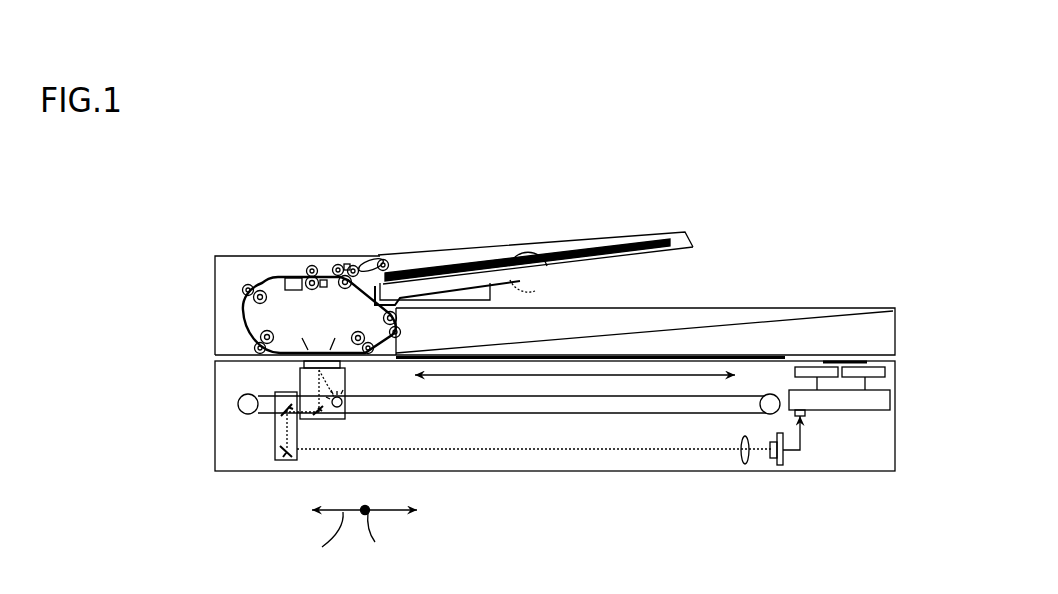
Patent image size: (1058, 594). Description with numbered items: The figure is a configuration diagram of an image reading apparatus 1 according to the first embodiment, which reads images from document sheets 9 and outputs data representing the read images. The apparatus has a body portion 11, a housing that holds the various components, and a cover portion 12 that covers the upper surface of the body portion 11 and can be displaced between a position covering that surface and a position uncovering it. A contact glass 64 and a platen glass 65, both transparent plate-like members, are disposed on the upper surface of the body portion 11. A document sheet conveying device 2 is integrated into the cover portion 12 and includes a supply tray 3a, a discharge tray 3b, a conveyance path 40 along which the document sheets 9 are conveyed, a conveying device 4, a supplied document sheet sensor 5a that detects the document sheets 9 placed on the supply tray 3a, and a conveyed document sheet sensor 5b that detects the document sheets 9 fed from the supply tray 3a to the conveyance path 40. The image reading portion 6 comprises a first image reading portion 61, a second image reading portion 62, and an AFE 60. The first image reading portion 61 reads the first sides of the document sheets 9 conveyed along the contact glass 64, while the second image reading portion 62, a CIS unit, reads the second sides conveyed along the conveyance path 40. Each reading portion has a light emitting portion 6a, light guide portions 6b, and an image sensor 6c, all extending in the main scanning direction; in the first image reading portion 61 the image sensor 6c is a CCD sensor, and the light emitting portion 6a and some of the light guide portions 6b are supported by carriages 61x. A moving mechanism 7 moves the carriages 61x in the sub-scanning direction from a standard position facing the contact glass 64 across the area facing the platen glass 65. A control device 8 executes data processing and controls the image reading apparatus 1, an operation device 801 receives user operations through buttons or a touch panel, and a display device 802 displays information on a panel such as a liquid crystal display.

The image reading apparatus 1 is at (791, 194).
The document sheet conveying device 2 is at (431, 238).
The supply tray 3a is at (649, 260).
The discharge tray 3b is at (740, 323).
The conveying device 4 is at (315, 256).
The supplied document sheet sensor 5a is at (535, 291).
The conveyed document sheet sensor 5b is at (324, 284).
The image reading portion 6 is at (558, 336).
The light emitting portion 6a is at (346, 400).
The light guide portions 6b is at (288, 410).
The image sensor 6c is at (780, 467).
The moving mechanism 7 is at (236, 405).
The control device 8 is at (890, 403).
The document sheets 9 is at (587, 253).
The body portion 11 is at (215, 443).
The cover portion 12 is at (898, 332).
The conveyance path 40 is at (263, 278).
The AFE 60 is at (805, 414).
The first image reading portion 61 is at (558, 435).
The carriages 61x is at (297, 438).
The second image reading portion 62 is at (280, 278).
The contact glass 64 is at (345, 369).
The platen glass 65 is at (760, 357).
The operation device 801 is at (858, 363).
The display device 802 is at (886, 373).